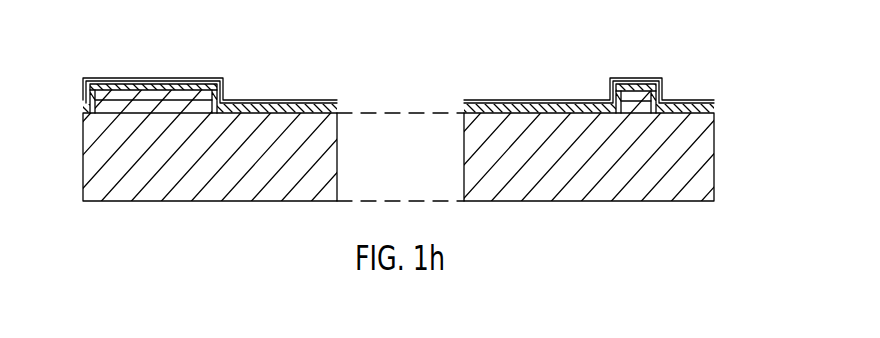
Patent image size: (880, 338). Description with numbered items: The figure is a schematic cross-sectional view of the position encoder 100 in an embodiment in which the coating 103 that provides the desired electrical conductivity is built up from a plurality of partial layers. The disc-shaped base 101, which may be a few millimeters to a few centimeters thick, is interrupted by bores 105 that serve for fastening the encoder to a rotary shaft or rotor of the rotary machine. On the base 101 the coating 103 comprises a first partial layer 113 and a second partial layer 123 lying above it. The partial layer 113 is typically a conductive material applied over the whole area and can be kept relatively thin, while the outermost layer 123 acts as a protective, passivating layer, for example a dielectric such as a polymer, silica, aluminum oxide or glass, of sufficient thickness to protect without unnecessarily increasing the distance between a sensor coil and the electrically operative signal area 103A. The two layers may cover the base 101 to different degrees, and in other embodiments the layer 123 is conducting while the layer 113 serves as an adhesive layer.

The position encoder 100 is at (407, 104).
The base 101 is at (707, 198).
The coating 103 is at (368, 68).
The signal area 103A is at (156, 83).
The bores 105 is at (417, 172).
The first partial layer 113 is at (83, 109).
The second partial layer 123 is at (83, 100).